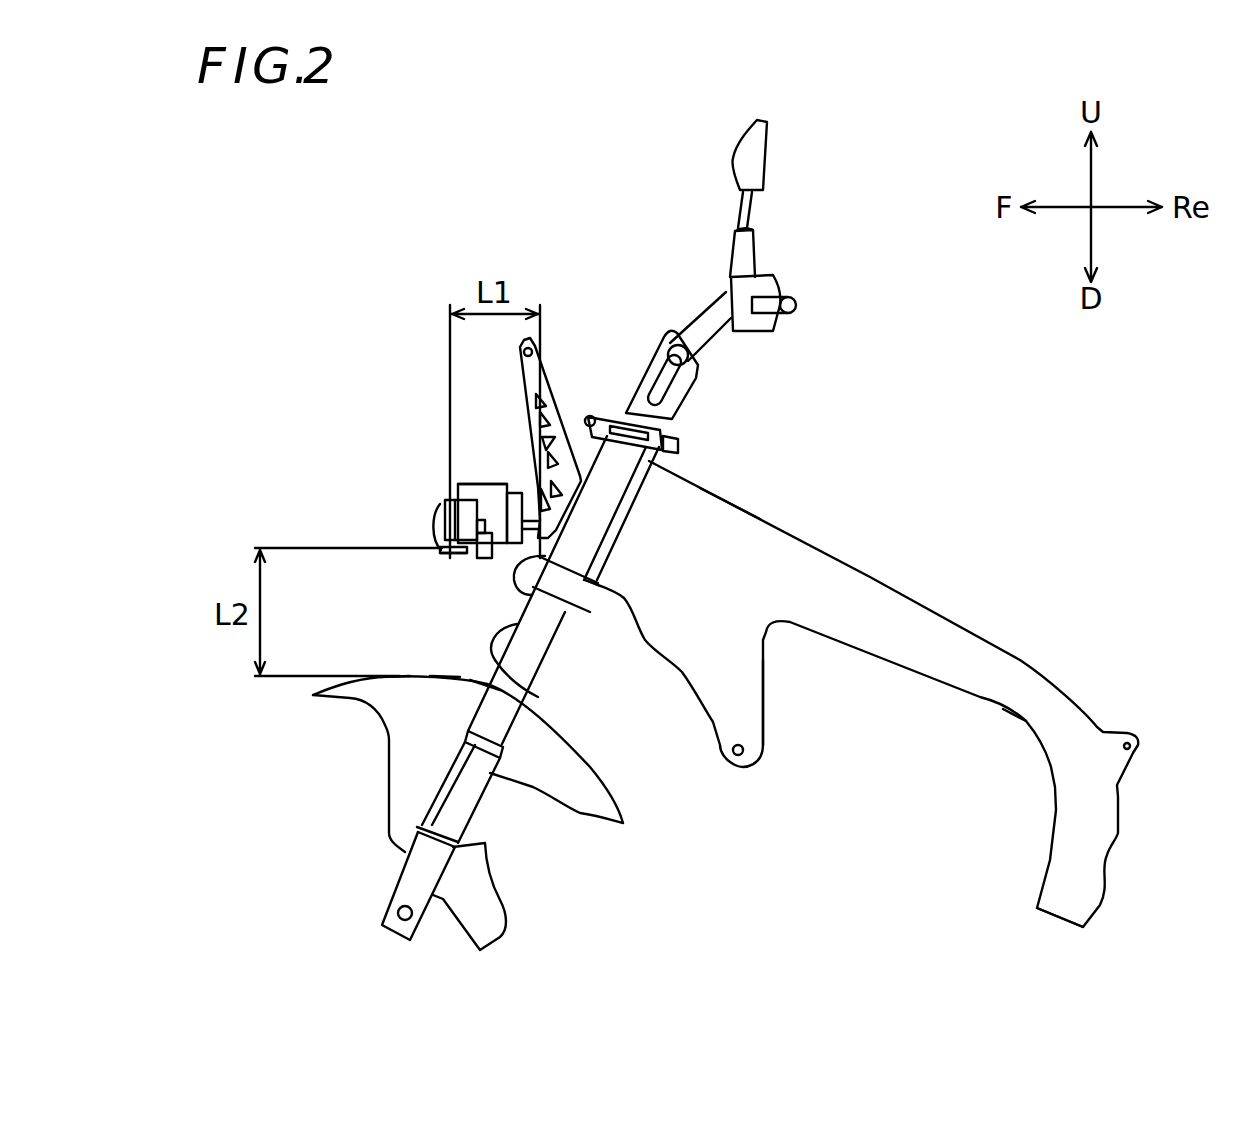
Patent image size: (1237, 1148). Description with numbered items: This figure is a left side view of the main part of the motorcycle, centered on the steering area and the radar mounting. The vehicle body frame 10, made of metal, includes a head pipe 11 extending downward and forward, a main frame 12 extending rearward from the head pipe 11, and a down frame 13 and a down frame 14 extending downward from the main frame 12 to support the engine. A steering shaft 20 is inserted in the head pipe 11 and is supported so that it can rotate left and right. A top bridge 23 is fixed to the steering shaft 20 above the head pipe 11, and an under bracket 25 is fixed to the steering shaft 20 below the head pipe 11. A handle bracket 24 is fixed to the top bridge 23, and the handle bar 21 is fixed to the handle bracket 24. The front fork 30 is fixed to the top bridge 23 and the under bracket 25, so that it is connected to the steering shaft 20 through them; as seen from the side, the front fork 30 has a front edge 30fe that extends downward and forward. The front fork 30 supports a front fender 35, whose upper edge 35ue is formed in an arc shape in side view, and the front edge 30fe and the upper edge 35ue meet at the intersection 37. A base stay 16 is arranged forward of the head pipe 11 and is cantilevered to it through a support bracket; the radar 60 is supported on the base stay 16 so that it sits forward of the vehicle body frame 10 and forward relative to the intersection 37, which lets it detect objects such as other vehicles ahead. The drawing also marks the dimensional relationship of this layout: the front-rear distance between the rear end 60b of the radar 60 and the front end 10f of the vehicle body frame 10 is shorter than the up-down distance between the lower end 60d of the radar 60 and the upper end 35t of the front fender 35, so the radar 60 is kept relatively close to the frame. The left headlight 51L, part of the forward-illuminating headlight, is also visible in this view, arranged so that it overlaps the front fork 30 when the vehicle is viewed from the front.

The vehicle body frame 10 is at (839, 543).
The front end of the vehicle body frame 10f is at (585, 672).
The head pipe 11 is at (613, 508).
The main frame 12 is at (891, 585).
The down frame 13 is at (763, 670).
The down frame 14 is at (1119, 798).
The base stay 16 is at (495, 485).
The steering shaft 20 is at (668, 465).
The handle bar 21 is at (722, 332).
The top bridge 23 is at (589, 416).
The handle bracket 24 is at (656, 367).
The under bracket 25 is at (572, 585).
The front fork 30 is at (560, 662).
The front edge of the front fork 30fe is at (543, 700).
The front fender 35 is at (330, 685).
The upper end of the front fender 35t is at (397, 677).
The upper edge of the front fender 35ue is at (443, 677).
The intersection 37 is at (490, 688).
The left headlight 51L is at (435, 526).
The radar 60 is at (437, 501).
The rear end of the radar 60b is at (451, 500).
The lower end of the radar 60d is at (440, 552).